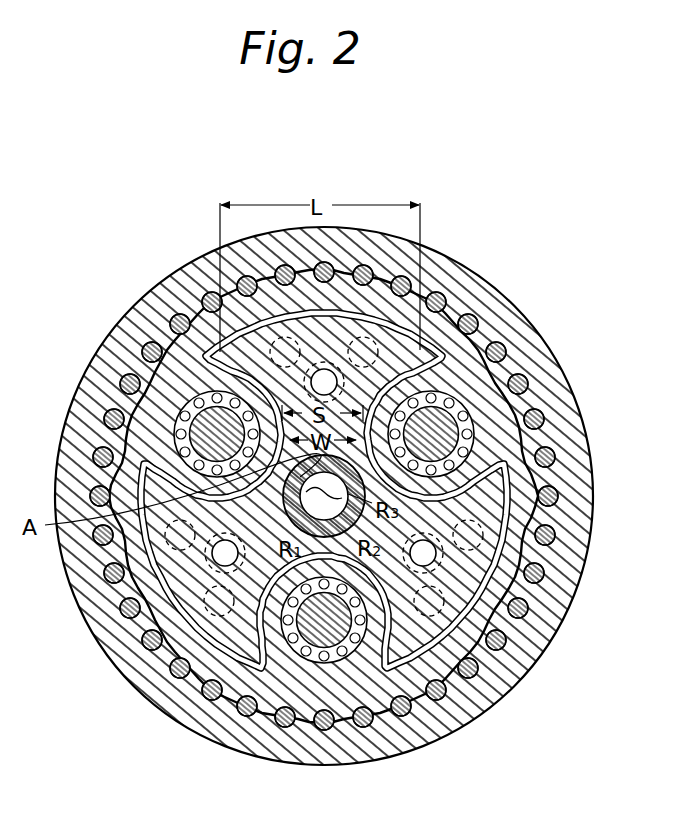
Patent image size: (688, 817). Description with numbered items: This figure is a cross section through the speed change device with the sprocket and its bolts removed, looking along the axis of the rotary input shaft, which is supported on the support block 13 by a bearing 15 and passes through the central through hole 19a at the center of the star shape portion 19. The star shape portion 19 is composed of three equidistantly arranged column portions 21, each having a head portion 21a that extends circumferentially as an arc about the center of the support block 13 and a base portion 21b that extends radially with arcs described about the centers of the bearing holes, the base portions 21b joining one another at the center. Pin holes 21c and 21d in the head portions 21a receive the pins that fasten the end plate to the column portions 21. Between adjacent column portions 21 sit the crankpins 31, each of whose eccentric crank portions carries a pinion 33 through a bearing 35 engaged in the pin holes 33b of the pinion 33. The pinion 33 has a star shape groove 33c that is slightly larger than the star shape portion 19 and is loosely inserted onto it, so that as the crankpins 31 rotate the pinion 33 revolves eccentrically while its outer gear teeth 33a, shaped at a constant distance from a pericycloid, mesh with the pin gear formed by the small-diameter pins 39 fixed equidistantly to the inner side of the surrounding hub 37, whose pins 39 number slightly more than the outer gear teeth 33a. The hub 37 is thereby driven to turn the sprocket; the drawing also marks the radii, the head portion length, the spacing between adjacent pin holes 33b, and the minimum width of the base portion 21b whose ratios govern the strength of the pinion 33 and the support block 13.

The support block 13 is at (195, 585).
The bearing 15 is at (185, 587).
The star shape portion 19 is at (268, 690).
The central through hole 19a is at (200, 686).
The column portion 21 is at (547, 625).
The head portion 21a is at (540, 596).
The base portion 21b is at (463, 720).
The pin hole 21c is at (530, 650).
The pin hole 21d is at (497, 677).
The crankpin 31 is at (520, 378).
The pinion 33 is at (466, 346).
The outer gear teeth 33a is at (497, 364).
The pin hole 33b is at (533, 402).
The star shape groove 33c is at (547, 507).
The bearing 35 is at (526, 444).
The hub 37 is at (466, 288).
The pin 39 is at (421, 262).